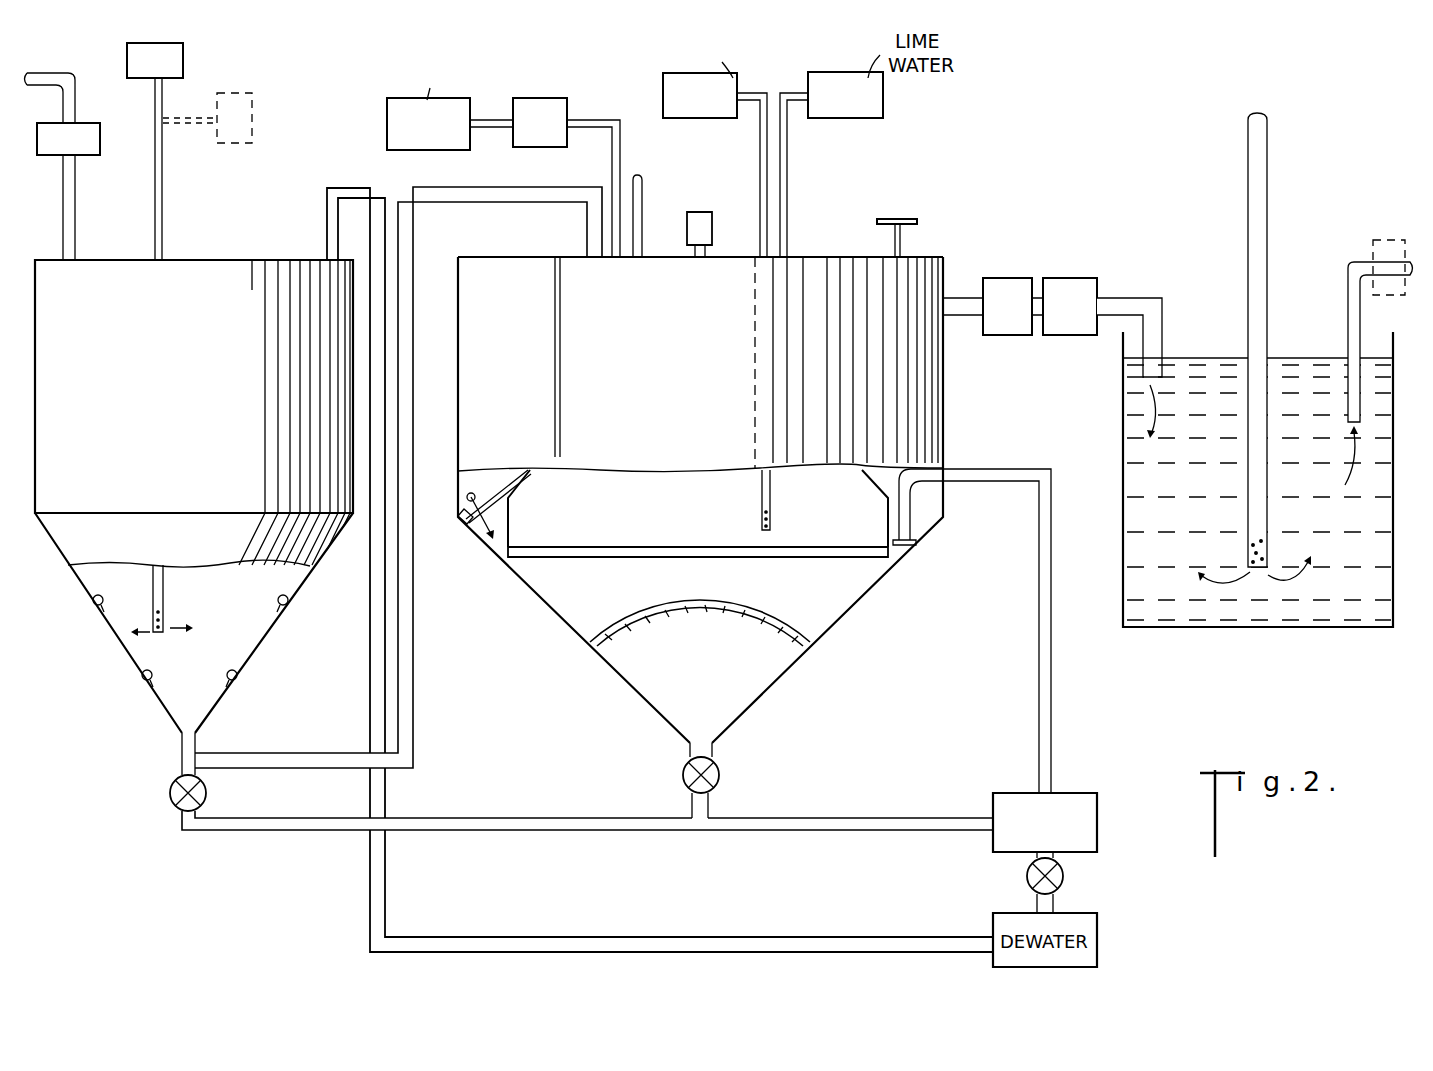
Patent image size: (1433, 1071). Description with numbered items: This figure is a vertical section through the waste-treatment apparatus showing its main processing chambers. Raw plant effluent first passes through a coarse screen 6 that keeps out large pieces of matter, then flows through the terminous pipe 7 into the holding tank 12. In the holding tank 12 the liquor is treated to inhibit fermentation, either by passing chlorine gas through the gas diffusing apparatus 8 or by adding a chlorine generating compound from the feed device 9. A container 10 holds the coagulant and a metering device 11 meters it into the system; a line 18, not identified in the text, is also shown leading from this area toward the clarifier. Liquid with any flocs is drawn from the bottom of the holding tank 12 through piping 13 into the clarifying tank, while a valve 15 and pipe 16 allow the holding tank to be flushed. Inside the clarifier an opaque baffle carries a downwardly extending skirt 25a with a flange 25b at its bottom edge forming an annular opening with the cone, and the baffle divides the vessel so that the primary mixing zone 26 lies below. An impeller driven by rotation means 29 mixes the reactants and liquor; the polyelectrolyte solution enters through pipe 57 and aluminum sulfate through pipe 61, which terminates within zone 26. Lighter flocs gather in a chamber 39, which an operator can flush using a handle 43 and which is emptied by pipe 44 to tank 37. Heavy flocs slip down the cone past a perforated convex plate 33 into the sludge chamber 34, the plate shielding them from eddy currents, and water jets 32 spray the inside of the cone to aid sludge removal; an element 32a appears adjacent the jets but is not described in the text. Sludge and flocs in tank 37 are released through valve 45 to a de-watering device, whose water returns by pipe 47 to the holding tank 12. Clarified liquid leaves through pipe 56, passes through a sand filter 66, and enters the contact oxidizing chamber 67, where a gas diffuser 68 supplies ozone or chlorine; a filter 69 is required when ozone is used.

The coarse screen 6 is at (100, 152).
The terminous pipe 7 is at (77, 228).
The gas diffusing apparatus 8 is at (183, 60).
The feed device 9 is at (252, 137).
The container 10 is at (387, 125).
The metering device 11 is at (535, 98).
The holding tank 12 is at (126, 656).
The piping 13 is at (296, 760).
The valve 15 is at (170, 798).
The pipe 16 is at (288, 818).
The chemical feed conduit 18 is at (603, 119).
The skirt 25a is at (512, 516).
The flange 25b is at (538, 554).
The primary mixing zone 26 is at (842, 581).
The means to rotate the impeller 29 is at (704, 211).
The water jets 32 is at (482, 542).
The scraper nozzle 32a is at (488, 478).
The perforated convex plate 33 is at (788, 622).
The sludge chamber 34 is at (727, 677).
The tank 37 is at (1100, 828).
The chamber 39 is at (919, 507).
The handle 43 is at (915, 218).
The pipe 44 is at (1050, 530).
The valve 45 is at (1065, 877).
The pipe 47 is at (806, 936).
The pipe 56 is at (956, 318).
The pipe 57 is at (645, 200).
The pipe 61 is at (758, 148).
The sand filter 66 is at (1022, 284).
The contact oxidizing chamber 67 is at (1117, 569).
The gas diffuser 68 is at (1267, 505).
The filter 69 is at (1387, 240).